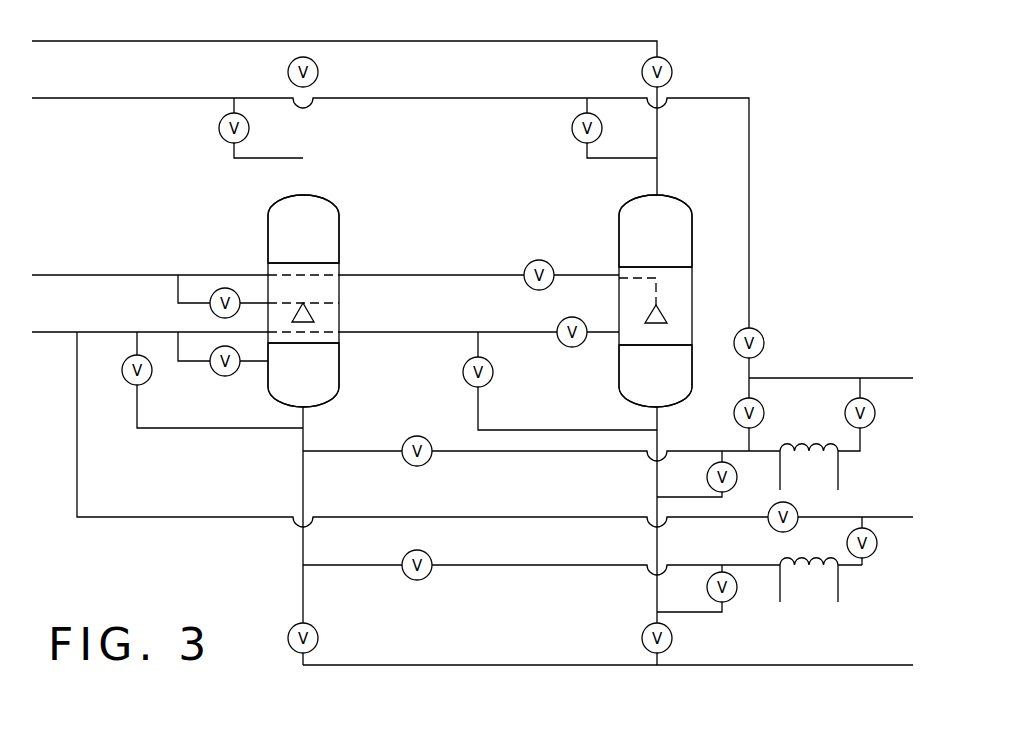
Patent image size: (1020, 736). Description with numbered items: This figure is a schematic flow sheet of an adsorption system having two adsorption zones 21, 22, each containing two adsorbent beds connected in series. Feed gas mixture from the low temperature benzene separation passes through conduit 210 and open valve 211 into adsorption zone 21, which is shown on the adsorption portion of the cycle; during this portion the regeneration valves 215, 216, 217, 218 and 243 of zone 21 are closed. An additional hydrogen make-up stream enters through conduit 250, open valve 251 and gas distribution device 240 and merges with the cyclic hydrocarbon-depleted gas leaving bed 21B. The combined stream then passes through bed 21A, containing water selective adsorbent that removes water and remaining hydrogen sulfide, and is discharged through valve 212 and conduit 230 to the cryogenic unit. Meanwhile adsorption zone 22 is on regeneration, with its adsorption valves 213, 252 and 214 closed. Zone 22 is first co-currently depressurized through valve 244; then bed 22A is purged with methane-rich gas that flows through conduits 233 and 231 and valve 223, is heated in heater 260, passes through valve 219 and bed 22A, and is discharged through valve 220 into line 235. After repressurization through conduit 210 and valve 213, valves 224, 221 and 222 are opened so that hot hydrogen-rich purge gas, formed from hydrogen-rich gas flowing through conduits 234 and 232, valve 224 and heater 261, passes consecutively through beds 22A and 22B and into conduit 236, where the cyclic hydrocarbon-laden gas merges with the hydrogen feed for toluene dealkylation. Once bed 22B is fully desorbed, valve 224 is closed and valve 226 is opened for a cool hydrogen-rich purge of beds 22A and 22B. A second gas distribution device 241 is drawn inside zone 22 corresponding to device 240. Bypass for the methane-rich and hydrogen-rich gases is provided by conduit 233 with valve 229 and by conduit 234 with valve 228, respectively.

The adsorption zone 21 is at (324, 197).
The adsorbent bed 21A is at (339, 384).
The adsorbent bed 21B is at (268, 228).
The adsorption zone 22 is at (677, 197).
The adsorbent bed 22A is at (619, 391).
The adsorbent bed 22B is at (619, 228).
The conduit 210 is at (130, 41).
The valve 211 is at (318, 72).
The valve 212 is at (318, 645).
The valve 213 is at (669, 64).
The valve 214 is at (672, 638).
The valve 215 is at (417, 580).
The valve 216 is at (214, 371).
The valve 217 is at (417, 466).
The valve 218 is at (220, 136).
The valve 219 is at (735, 592).
The valve 220 is at (559, 324).
The valve 221 is at (707, 476).
The valve 222 is at (573, 136).
The valve 223 is at (873, 553).
The valve 224 is at (875, 415).
The valve 226 is at (734, 413).
The valve 228 is at (764, 343).
The valve 229 is at (772, 528).
The conduit 230 is at (793, 665).
The conduit 231 is at (862, 517).
The conduit 232 is at (860, 390).
The conduit 233 is at (887, 517).
The conduit 234 is at (878, 378).
The line 235 is at (49, 332).
The conduit 236 is at (109, 98).
The gas distribution device 240 is at (312, 315).
The distributor in second vessel 241 is at (667, 315).
The valve 243 is at (123, 376).
The valve 244 is at (493, 372).
The conduit 250 is at (63, 275).
The valve 251 is at (211, 307).
The valve 252 is at (528, 265).
The heater 260 is at (838, 592).
The heater 261 is at (840, 470).